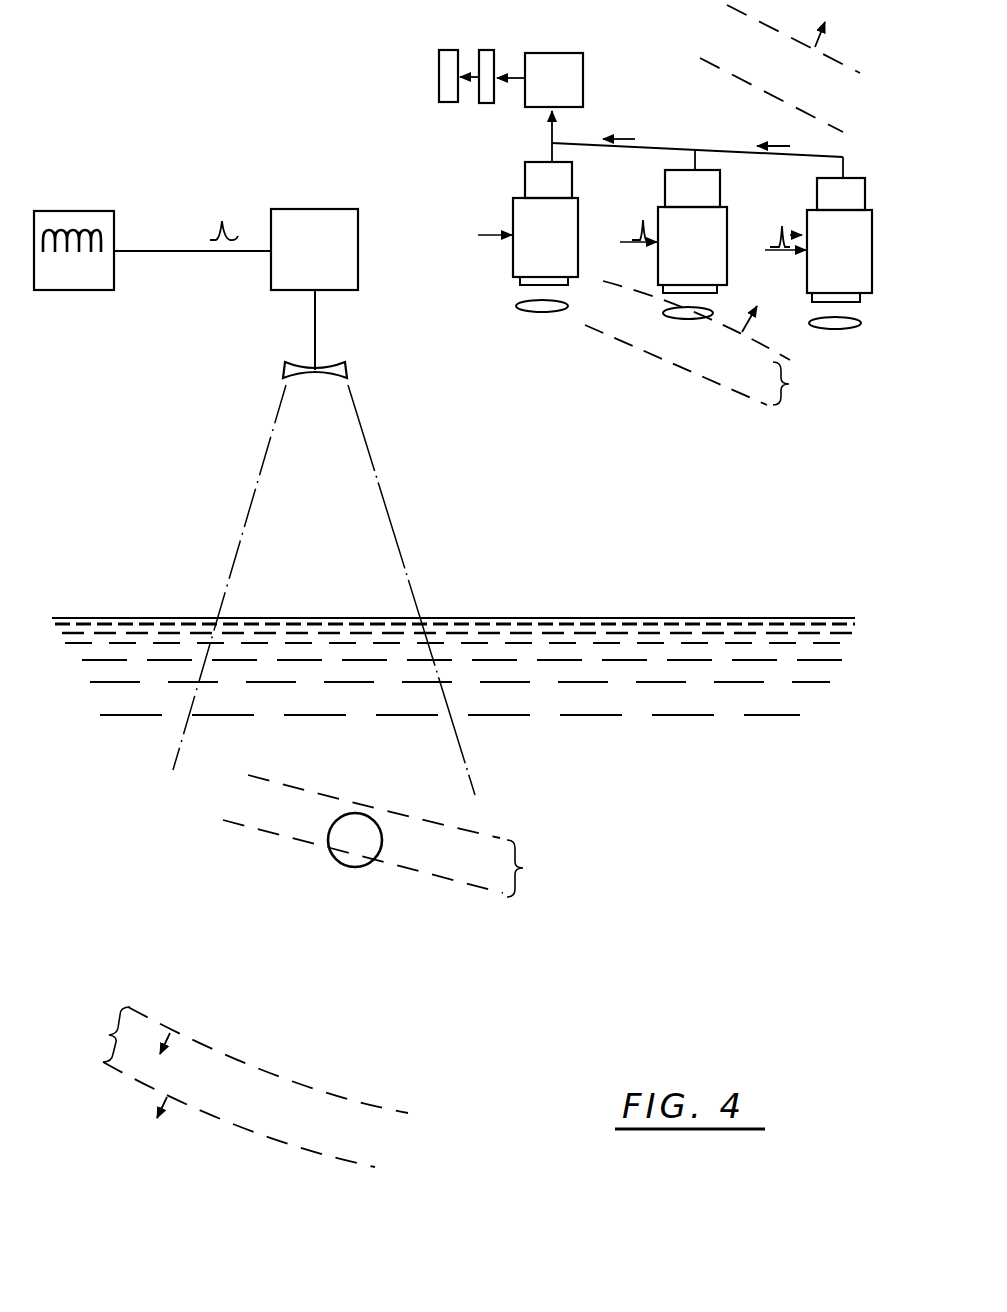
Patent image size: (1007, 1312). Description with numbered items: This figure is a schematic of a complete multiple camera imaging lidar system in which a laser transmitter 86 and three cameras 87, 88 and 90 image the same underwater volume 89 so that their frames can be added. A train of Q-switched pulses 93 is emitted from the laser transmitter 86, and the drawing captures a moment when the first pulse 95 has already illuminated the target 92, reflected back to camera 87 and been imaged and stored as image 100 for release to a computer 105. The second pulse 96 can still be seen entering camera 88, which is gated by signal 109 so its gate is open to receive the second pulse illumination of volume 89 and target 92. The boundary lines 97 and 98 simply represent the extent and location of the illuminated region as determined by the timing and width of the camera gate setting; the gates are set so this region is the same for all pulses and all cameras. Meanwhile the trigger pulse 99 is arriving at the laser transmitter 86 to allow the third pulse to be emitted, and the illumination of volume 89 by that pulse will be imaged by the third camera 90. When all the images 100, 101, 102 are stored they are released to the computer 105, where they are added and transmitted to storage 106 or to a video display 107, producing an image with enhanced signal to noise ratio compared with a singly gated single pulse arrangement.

The laser transmitter 86 is at (270, 270).
The camera 87 is at (512, 267).
The camera 88 is at (657, 257).
The volume 89 is at (663, 629).
The third camera 90 is at (806, 269).
The target 92 is at (340, 867).
The train of Q-switched pulses 93 is at (73, 232).
The first pulse 95 is at (239, 1087).
The second pulse 96 is at (730, 392).
The boundary line 97 is at (288, 792).
The boundary line 98 is at (254, 843).
The trigger pulse 99 is at (216, 222).
The image 100 is at (523, 177).
The image 101 is at (664, 183).
The image 102 is at (816, 190).
The computer 105 is at (566, 53).
The storage 106 is at (486, 50).
The video display 107 is at (450, 50).
The gating signal 109 is at (640, 226).